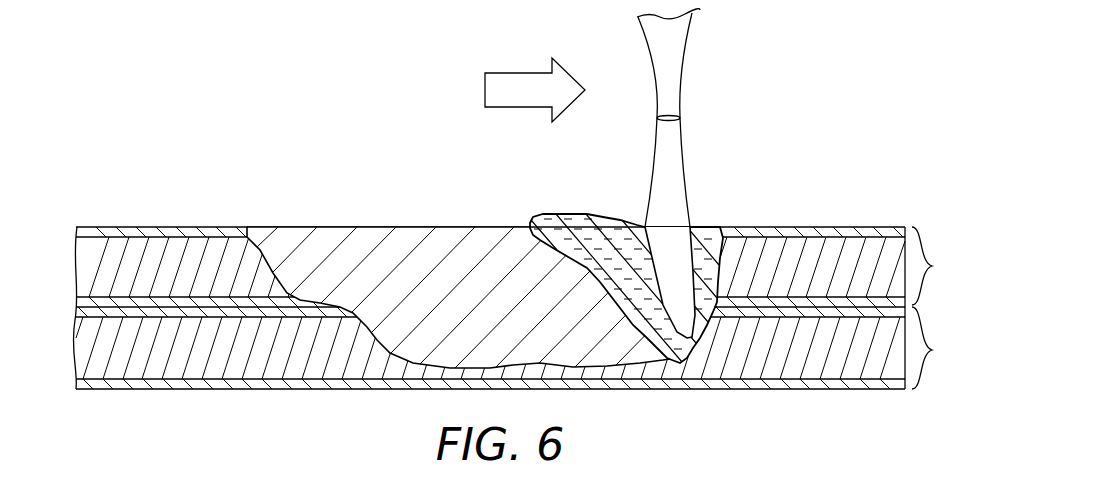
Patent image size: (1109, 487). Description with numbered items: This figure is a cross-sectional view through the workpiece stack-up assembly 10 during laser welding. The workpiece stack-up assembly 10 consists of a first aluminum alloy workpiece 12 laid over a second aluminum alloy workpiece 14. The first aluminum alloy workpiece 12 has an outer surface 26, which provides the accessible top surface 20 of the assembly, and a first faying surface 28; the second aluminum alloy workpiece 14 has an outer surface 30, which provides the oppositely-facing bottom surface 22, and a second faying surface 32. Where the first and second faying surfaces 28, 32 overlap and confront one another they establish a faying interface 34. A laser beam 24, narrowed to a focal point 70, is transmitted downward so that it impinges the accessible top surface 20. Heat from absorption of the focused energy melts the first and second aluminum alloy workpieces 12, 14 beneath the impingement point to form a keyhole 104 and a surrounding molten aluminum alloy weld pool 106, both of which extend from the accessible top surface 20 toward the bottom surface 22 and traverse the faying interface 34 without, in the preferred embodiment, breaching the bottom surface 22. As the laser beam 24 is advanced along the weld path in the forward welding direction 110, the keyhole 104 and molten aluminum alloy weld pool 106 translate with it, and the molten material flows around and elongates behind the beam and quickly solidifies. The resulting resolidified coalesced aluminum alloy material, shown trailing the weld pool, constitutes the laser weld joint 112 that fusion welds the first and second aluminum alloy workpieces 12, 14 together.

The workpiece stack-up assembly 10 is at (952, 299).
The first aluminum alloy workpiece 12 is at (519, 266).
The second aluminum alloy workpiece 14 is at (519, 348).
The accessible top surface 20 is at (854, 222).
The bottom surface 22 is at (829, 396).
The laser beam 24 is at (687, 50).
The outer surface of the first aluminum alloy workpiece 26 is at (790, 225).
The first faying surface 28 is at (742, 308).
The outer surface of the second aluminum alloy workpiece 30 is at (872, 390).
The second faying surface 32 is at (803, 306).
The faying interface 34 is at (880, 320).
The focal point 70 is at (673, 117).
The keyhole 104 is at (673, 227).
The molten aluminum alloy weld pool 106 is at (605, 218).
The forward welding direction 110 is at (517, 85).
The laser weld joint 112 is at (358, 242).